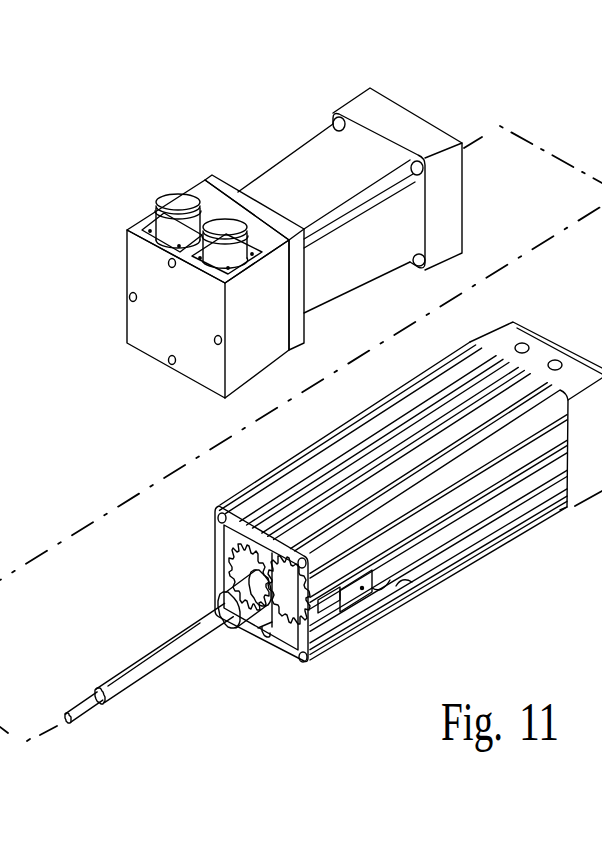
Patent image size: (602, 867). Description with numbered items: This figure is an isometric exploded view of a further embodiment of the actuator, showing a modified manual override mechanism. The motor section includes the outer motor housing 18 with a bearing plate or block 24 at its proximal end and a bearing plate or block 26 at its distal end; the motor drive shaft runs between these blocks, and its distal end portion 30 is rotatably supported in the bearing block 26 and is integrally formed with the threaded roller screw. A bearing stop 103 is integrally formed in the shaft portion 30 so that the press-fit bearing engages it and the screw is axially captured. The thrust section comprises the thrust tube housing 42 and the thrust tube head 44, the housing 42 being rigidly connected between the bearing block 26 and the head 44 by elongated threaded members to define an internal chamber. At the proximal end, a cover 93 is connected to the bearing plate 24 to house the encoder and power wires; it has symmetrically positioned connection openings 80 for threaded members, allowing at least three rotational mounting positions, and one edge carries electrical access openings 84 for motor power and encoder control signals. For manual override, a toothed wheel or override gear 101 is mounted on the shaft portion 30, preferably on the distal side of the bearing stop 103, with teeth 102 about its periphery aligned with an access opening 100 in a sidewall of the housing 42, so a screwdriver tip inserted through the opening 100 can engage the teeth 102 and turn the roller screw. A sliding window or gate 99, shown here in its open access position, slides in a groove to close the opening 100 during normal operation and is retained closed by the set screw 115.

The outer motor housing 18 is at (295, 173).
The bearing plate or block 24 is at (248, 213).
The bearing plate or block 26 is at (402, 108).
The distal end portion of the motor shaft 30 is at (235, 588).
The thrust tube housing 42 is at (447, 393).
The thrust tube head 44 is at (548, 353).
The connection openings 80 is at (129, 297).
The electrical access openings 84 is at (178, 205).
The cover 93 is at (143, 330).
The sliding window or gate (closure means) 99 is at (350, 600).
The access opening 100 is at (338, 628).
The toothed wheel or override gear 101 is at (289, 640).
The teeth 102 is at (233, 553).
The bearing stop 103 is at (262, 633).
The set screw 115 is at (412, 582).